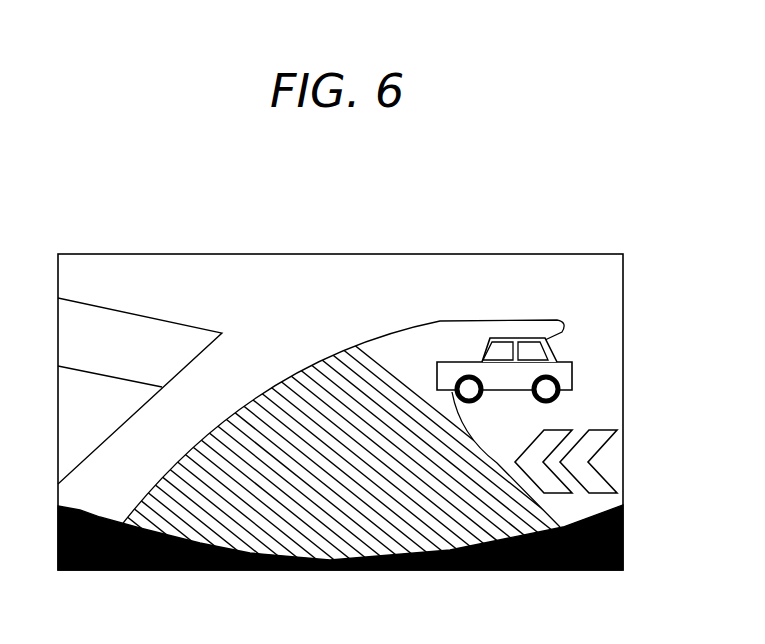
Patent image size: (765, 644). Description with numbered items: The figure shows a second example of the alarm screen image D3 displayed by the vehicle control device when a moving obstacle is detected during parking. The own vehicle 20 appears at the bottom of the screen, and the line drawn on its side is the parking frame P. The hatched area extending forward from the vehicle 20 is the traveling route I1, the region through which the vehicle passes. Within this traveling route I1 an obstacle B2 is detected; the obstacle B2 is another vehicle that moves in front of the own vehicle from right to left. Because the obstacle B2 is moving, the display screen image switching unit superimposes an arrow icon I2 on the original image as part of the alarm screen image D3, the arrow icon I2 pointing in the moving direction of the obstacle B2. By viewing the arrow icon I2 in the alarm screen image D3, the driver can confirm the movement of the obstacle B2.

The alarm screen image D3 is at (623, 325).
The parking frame P is at (150, 320).
The traveling route I1 is at (407, 335).
The obstacle B2 is at (572, 364).
The arrow icon I2 is at (598, 443).
The vehicle 20 is at (623, 521).